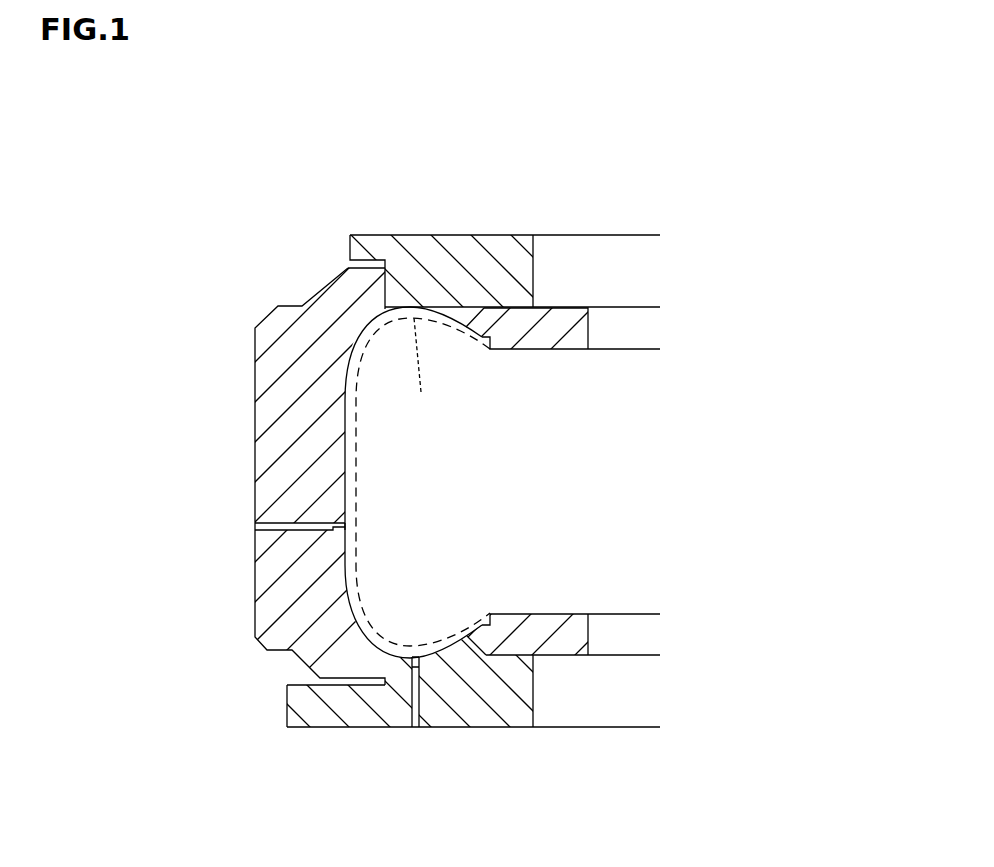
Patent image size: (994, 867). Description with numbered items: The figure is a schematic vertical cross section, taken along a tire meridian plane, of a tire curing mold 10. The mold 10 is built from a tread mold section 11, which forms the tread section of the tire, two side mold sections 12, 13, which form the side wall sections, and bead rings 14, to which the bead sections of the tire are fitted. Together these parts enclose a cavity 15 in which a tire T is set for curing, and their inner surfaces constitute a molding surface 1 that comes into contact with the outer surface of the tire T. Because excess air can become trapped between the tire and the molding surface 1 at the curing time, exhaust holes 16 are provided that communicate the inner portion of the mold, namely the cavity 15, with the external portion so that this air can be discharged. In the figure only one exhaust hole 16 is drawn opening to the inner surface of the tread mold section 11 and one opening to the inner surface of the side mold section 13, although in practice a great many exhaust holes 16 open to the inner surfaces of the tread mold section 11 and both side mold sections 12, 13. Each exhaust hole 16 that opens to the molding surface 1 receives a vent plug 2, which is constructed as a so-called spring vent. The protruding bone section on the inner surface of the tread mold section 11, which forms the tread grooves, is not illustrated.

The molding surface 1 is at (348, 498).
The vent plug 2 is at (352, 524).
The tire curing mold 10 is at (558, 193).
The tread mold section 11 is at (258, 458).
The side mold section 12 is at (458, 235).
The side mold section 13 is at (367, 728).
The bead rings 14 is at (563, 349).
The cavity 15 is at (440, 466).
The exhaust hole 16 is at (255, 525).
The tire T is at (421, 368).